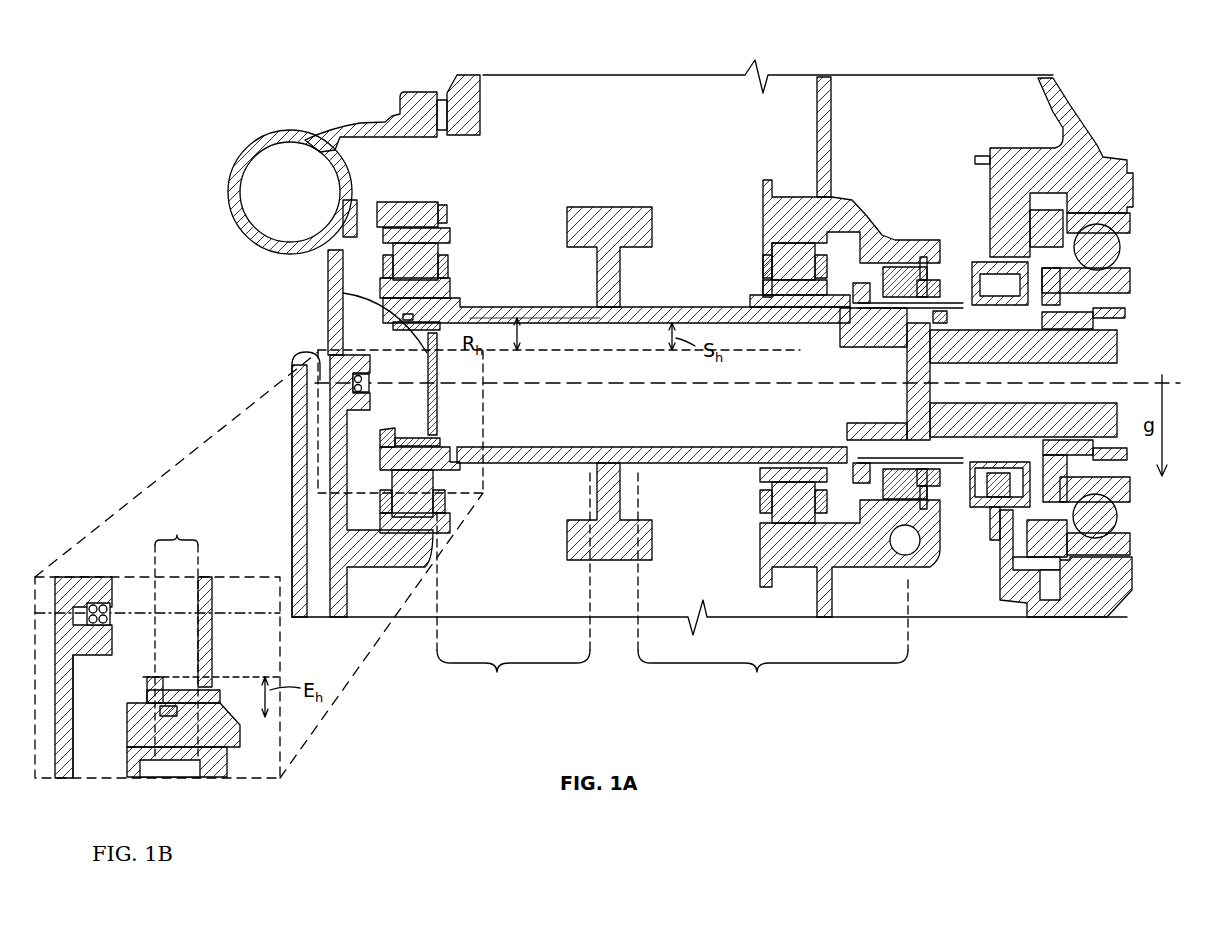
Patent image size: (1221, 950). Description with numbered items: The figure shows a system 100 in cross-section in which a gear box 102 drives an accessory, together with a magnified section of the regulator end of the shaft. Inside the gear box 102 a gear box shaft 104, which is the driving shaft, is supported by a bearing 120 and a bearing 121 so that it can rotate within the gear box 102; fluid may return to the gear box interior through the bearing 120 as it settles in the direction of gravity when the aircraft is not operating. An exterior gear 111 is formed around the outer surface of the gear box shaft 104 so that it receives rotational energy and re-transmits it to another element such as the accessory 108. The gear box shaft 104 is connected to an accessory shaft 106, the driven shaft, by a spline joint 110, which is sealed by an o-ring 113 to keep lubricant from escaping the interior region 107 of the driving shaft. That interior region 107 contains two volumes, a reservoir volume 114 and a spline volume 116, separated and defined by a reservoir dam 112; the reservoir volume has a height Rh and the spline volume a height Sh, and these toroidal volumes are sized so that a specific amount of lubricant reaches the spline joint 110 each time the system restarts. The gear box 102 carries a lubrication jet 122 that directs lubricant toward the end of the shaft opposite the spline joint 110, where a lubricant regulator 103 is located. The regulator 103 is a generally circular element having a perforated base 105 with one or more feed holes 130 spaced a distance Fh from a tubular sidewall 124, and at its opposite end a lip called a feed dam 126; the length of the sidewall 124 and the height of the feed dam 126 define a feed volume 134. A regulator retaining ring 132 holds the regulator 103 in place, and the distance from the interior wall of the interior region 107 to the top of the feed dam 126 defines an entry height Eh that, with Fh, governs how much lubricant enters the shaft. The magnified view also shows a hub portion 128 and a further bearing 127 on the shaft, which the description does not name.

In FIG. 1A, the system 100 is at (280, 92).
In FIG. 1A, the gear box 102 is at (290, 395).
In FIG. 1B, the gear box 102 is at (75, 763).
In FIG. 1A, the lubricant regulator 103 is at (340, 297).
In FIG. 1A, the gear box shaft 104 is at (697, 317).
In FIG. 1B, the gear box shaft 104 is at (233, 765).
In FIG. 1A, the perforated base 105 is at (440, 398).
In FIG. 1B, the perforated base 105 is at (212, 652).
In FIG. 1A, the accessory shaft 106 is at (1112, 337).
In FIG. 1A, the interior region 107 is at (812, 427).
In FIG. 1A, the accessory 108 is at (1025, 148).
In FIG. 1A, the spline joint 110 is at (880, 325).
In FIG. 1A, the exterior gear 111 is at (609, 206).
In FIG. 1A, the reservoir dam 112 is at (587, 337).
In FIG. 1A, the o-ring 113 is at (945, 318).
In FIG. 1A, the reservoir volume 114 is at (497, 672).
In FIG. 1A, the spline volume 116 is at (757, 672).
In FIG. 1A, the bearing 120 is at (440, 518).
In FIG. 1A, the bearing 121 is at (782, 262).
In FIG. 1A, the lubrication jet 122 is at (342, 378).
In FIG. 1B, the lubrication jet 122 is at (72, 610).
In FIG. 1A, the tubular sidewall 124 is at (412, 436).
In FIG. 1B, the tubular sidewall 124 is at (168, 690).
In FIG. 1A, the feed dam 126 is at (383, 440).
In FIG. 1B, the feed dam 126 is at (148, 690).
In FIG. 1A, the bearing 127 is at (765, 512).
In FIG. 1B, the hub 128 is at (150, 742).
In FIG. 1B, the feed holes 130 is at (218, 687).
In FIG. 1B, the regulator retaining ring 132 is at (158, 710).
In FIG. 1B, the feed volume 134 is at (178, 534).